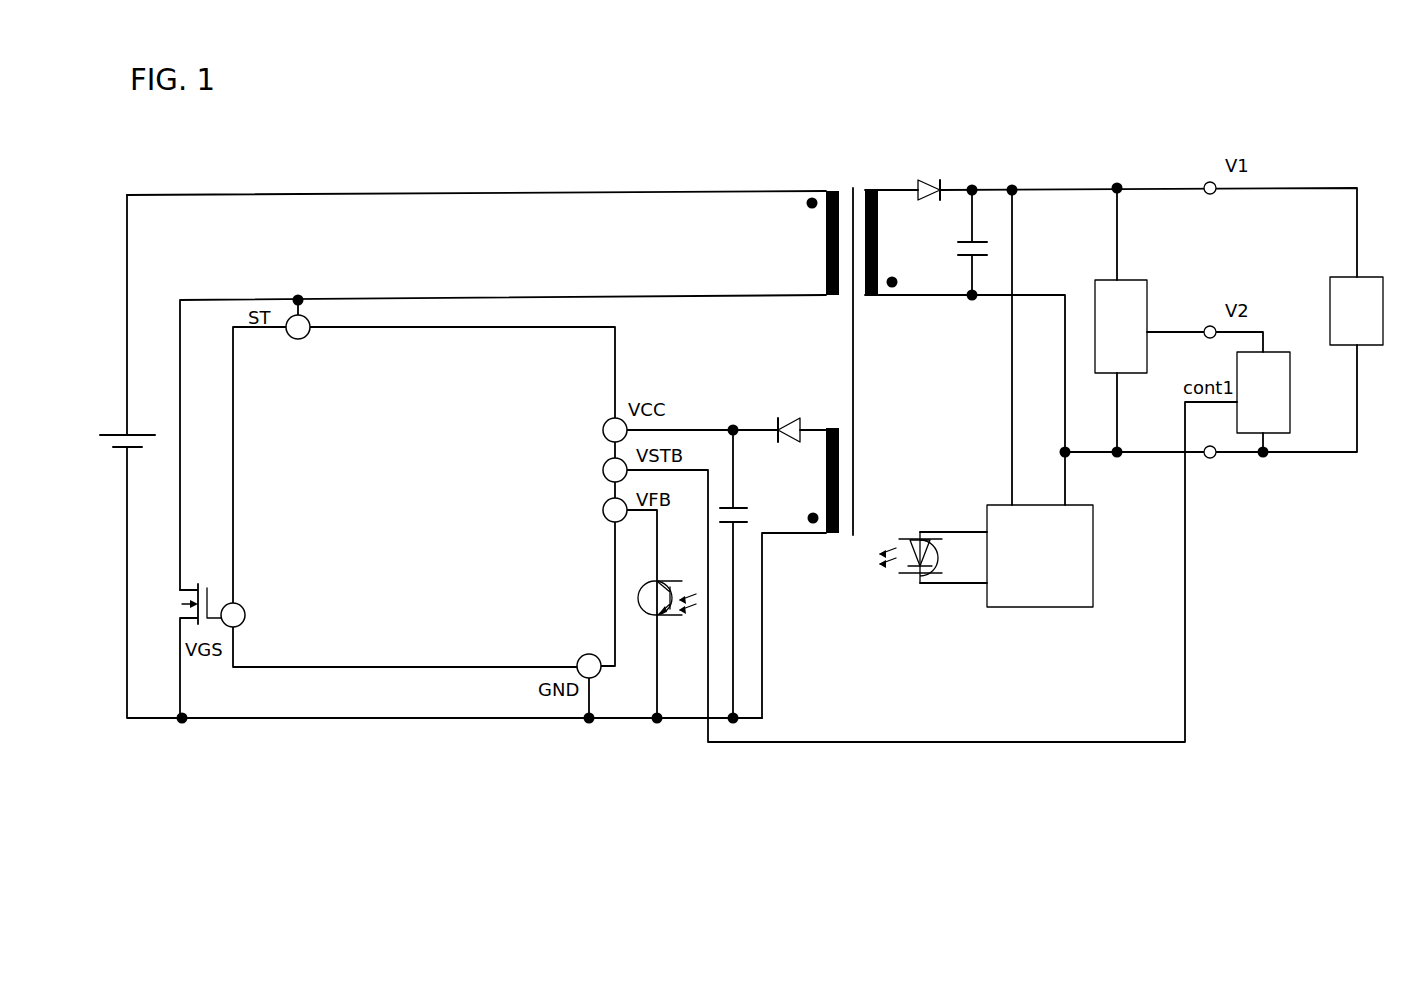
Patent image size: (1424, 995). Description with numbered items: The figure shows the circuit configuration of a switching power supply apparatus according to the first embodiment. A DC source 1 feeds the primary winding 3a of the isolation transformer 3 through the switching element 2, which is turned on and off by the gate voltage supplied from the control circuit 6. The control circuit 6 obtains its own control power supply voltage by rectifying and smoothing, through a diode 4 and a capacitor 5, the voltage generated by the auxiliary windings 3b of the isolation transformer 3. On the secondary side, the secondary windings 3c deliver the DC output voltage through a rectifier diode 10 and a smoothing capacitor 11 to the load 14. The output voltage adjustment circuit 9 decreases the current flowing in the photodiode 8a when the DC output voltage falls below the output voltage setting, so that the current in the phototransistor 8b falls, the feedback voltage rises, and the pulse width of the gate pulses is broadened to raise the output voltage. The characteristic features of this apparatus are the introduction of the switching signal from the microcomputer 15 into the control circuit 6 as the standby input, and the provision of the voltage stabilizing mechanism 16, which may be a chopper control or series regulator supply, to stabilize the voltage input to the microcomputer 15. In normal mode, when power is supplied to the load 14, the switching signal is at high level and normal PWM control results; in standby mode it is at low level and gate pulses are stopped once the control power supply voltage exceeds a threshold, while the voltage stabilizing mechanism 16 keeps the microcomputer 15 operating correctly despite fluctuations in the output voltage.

The DC power source 1 is at (113, 420).
The switching element 2 is at (168, 575).
The isolation transformer 3 is at (850, 327).
The primary winding 3a is at (814, 256).
The auxiliary windings 3b is at (818, 496).
The secondary windings 3c is at (893, 245).
The rectifier diode 4 is at (800, 403).
The capacitor 5 is at (757, 520).
The control circuit 6 is at (440, 337).
The photodiode 8a is at (922, 596).
The phototransistor 8b is at (668, 624).
The output voltage adjustment circuit 9 is at (1040, 620).
The rectifier diode 10 is at (930, 176).
The smoothing capacitor 11 is at (955, 242).
The load 14 is at (1370, 358).
The microcomputer 15 is at (1303, 392).
The voltage stabilizing mechanism 16 is at (1090, 266).